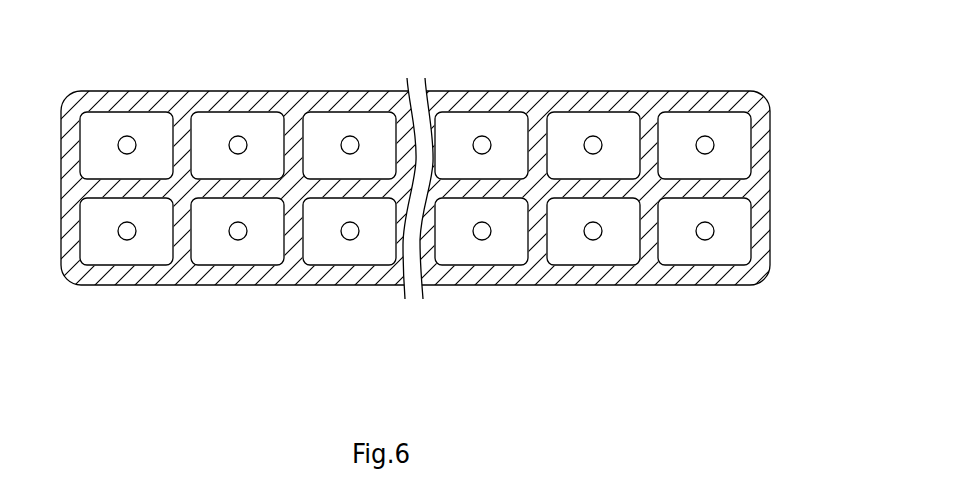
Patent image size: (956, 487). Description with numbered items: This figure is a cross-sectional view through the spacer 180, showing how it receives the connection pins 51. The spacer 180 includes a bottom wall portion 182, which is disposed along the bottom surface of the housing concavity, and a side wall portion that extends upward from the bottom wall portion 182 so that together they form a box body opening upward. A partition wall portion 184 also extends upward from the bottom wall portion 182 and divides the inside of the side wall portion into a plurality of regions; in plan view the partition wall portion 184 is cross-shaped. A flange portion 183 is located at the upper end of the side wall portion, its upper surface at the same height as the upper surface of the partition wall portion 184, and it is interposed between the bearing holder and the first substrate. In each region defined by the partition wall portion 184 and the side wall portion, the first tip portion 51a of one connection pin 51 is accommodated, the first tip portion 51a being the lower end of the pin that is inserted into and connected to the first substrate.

The spacer 180 is at (478, 181).
The bottom wall portion 182 is at (728, 258).
The flange portion 183 is at (683, 277).
The partition wall portion 184 is at (537, 232).
The connection pin 51 is at (127, 240).
The first tip portion 51a is at (714, 144).